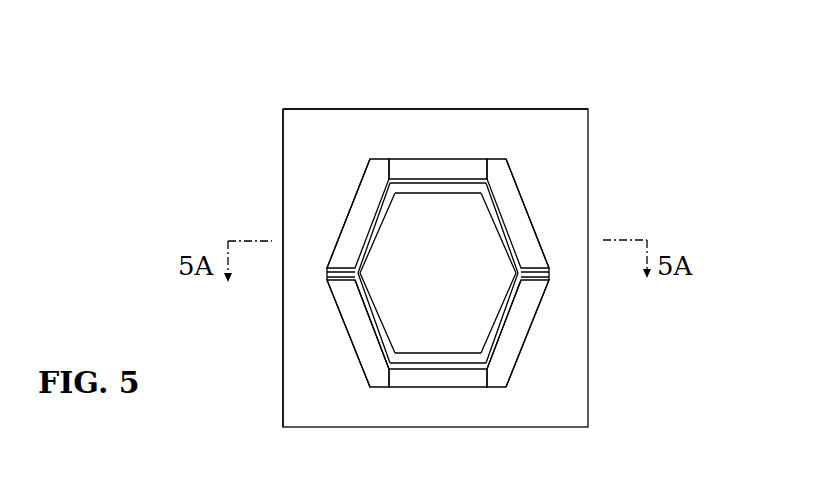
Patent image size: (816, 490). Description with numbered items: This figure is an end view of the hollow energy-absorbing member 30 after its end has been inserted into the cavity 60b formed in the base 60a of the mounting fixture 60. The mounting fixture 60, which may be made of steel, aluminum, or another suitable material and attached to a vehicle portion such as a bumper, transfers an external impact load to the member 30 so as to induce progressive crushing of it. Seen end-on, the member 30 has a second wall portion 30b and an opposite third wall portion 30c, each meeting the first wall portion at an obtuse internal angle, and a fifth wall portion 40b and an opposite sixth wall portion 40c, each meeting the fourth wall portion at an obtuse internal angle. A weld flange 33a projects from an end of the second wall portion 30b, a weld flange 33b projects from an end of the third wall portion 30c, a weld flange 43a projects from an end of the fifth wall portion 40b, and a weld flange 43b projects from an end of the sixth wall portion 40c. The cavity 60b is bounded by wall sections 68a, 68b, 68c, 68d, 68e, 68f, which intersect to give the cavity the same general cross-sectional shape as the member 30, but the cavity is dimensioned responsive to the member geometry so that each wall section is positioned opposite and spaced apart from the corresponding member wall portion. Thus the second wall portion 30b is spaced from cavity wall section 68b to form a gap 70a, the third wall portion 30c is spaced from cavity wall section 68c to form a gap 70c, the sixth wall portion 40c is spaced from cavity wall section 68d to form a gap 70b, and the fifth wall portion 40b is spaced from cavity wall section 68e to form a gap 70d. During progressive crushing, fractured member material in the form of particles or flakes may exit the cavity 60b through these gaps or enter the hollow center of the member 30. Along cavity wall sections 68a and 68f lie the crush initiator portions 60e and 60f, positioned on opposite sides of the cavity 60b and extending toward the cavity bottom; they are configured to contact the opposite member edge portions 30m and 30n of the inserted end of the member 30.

The energy-absorbing member 30 is at (513, 201).
The second wall portion 30b is at (380, 210).
The third wall portion 30c is at (503, 194).
The member edge portion 30m is at (456, 173).
The member edge portion 30n is at (440, 370).
The weld flange 33a is at (253, 296).
The weld flange 33b is at (610, 240).
The fifth wall portion 40b is at (513, 303).
The sixth wall portion 40c is at (360, 297).
The weld flange 43a is at (548, 267).
The weld flange 43b is at (336, 281).
The mounting fixture 60 is at (283, 183).
The base 60a is at (398, 130).
The cavity 60b is at (370, 159).
The crush initiator portion 60e is at (432, 175).
The crush initiator portion 60f is at (472, 370).
The cavity wall section 68a is at (418, 165).
The cavity wall section 68b is at (348, 215).
The cavity wall section 68c is at (528, 212).
The cavity wall section 68d is at (347, 327).
The cavity wall section 68e is at (523, 348).
The cavity wall section 68f is at (455, 385).
The gap 70a is at (350, 237).
The gap 70b is at (363, 340).
The gap 70c is at (523, 227).
The gap 70d is at (518, 323).